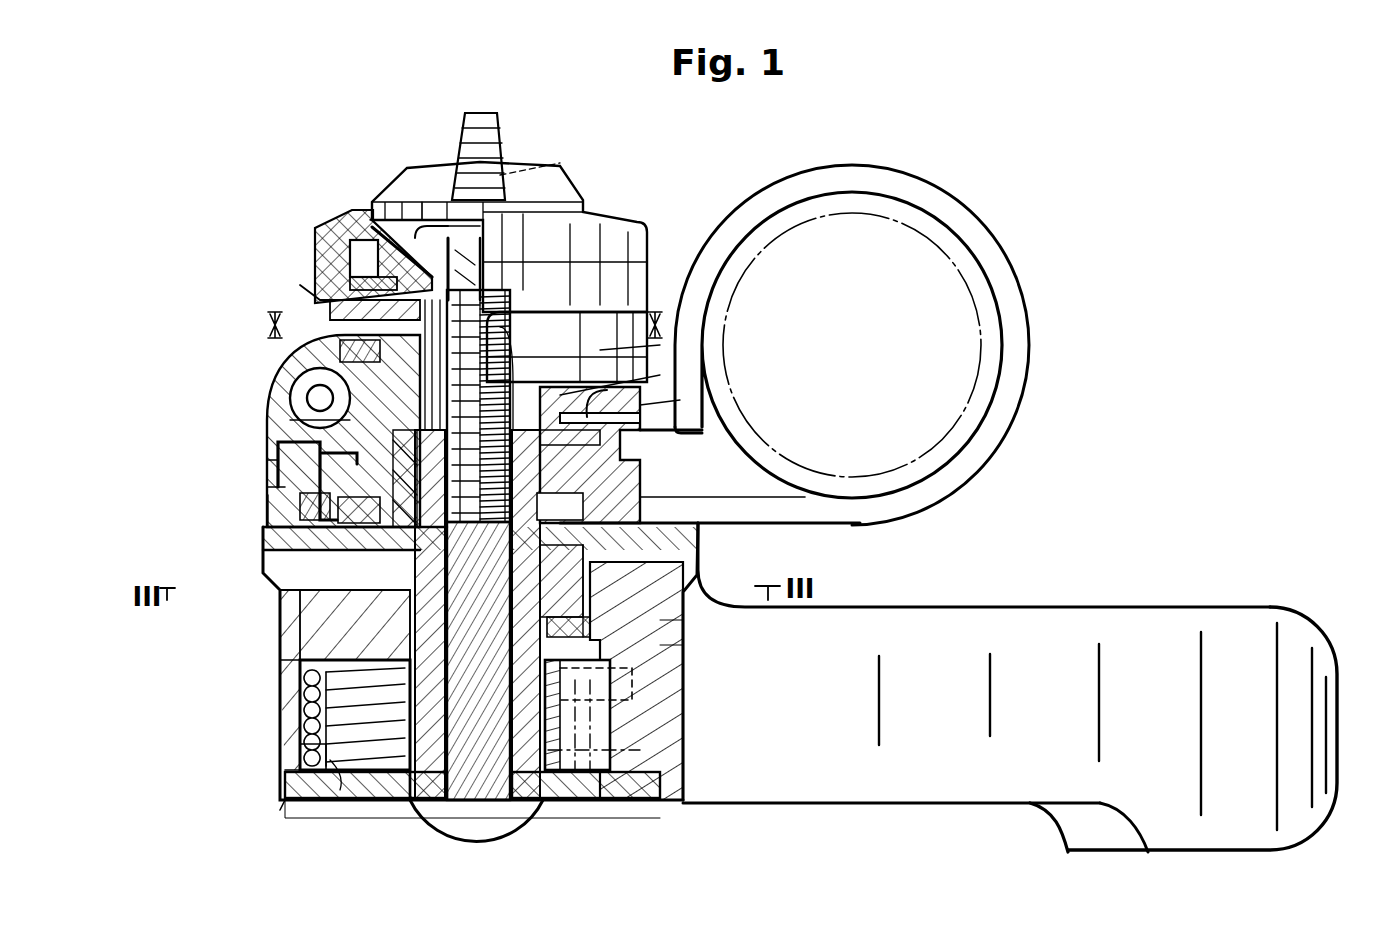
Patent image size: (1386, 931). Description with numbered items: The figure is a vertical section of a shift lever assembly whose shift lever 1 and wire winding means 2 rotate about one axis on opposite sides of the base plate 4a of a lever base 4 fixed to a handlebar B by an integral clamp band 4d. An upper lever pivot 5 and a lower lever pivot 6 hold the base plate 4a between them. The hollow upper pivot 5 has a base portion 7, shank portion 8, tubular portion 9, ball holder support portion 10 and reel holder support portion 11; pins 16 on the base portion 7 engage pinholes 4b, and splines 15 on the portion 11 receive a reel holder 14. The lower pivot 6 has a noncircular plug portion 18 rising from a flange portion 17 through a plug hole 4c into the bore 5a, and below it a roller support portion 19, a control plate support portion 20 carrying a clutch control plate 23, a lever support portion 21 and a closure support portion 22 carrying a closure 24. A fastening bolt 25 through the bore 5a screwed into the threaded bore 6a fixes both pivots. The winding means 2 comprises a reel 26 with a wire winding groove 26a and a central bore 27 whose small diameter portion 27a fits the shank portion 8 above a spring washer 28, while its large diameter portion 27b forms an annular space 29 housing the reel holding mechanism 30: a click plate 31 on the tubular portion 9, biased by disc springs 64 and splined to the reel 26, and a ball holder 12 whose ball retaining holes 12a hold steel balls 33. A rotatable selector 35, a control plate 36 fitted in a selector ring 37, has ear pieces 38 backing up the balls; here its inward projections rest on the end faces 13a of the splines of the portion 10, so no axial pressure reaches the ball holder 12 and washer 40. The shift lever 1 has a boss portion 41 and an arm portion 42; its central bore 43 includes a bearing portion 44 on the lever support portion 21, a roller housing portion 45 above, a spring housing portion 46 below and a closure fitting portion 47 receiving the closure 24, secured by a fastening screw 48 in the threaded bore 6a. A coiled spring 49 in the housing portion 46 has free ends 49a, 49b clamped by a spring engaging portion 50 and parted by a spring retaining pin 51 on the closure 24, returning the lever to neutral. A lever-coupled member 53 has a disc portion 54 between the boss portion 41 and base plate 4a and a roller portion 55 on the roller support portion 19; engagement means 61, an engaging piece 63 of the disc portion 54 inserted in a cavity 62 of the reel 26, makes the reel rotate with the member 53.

The shift lever 1 is at (965, 607).
The wire winding means 2 is at (690, 242).
The lever base 4 is at (762, 527).
The base plate 4a is at (700, 512).
The pinholes 4b is at (275, 558).
The plug hole 4c is at (275, 585).
The clamp band 4d is at (1000, 244).
The upper lever pivot 5 is at (640, 418).
The bore 5a is at (650, 436).
The lower lever pivot 6 is at (310, 700).
The threaded bore 6a is at (305, 722).
The large-diameter base portion 7 is at (300, 490).
The shank portion 8 is at (330, 378).
The tubular portion 9 is at (330, 345).
The ball holder support portion 10 is at (542, 192).
The reel holder support portion 11 is at (423, 202).
The ball holder 12 is at (295, 275).
The ball retaining holes 12a is at (600, 330).
The end faces 13a is at (520, 177).
The reel holder 14 is at (367, 207).
The splines 15 is at (374, 182).
The pins 16 is at (290, 540).
The base-end flange portion 17 is at (280, 600).
The plug portion 18 is at (625, 475).
The roller support portion 19 is at (290, 610).
The control plate support portion 20 is at (688, 660).
The lever support portion 21 is at (688, 735).
The closure support portion 22 is at (415, 802).
The clutch control plate 23 is at (688, 680).
The closure 24 is at (322, 802).
The fastening bolt 25 is at (519, 175).
The reel 26 is at (300, 405).
The wire winding groove 26a is at (680, 400).
The central bore 27 is at (310, 432).
The base-end small diameter portion 27a is at (320, 420).
The upper-end large diameter portion 27b is at (305, 322).
The spring washer 28 is at (300, 522).
The annular space 29 is at (340, 365).
The reel holding mechanism 30 is at (297, 287).
The click plate 31 is at (660, 345).
The steel balls 33 is at (307, 247).
The rotatable selector 35 is at (310, 253).
The control plate 36 is at (380, 217).
The selector ring 37 is at (310, 250).
The ear pieces 38 is at (318, 252).
The washer 40 is at (300, 293).
The base-end boss portion 41 is at (300, 746).
The arm portion 42 is at (1066, 607).
The central bore 43 is at (300, 664).
The bearing portion 44 is at (305, 682).
The roller housing portion 45 is at (688, 625).
The spring housing portion 46 is at (300, 775).
The closure fitting portion 47 is at (285, 802).
The fastening screw 48 is at (512, 832).
The coiled spring 49 is at (372, 792).
The upper free end 49a is at (688, 702).
The lower free end 49b is at (688, 770).
The spring engaging portion 50 is at (688, 713).
The spring retaining pin 51 is at (605, 802).
The lever-coupled member 53 is at (690, 605).
The disc portion 54 is at (703, 532).
The roller portion 55 is at (688, 645).
The engagement means 61 is at (290, 472).
The cavity 62 is at (300, 507).
The engaging piece 63 is at (300, 452).
The disc springs 64 is at (660, 375).
The handlebar B is at (805, 510).